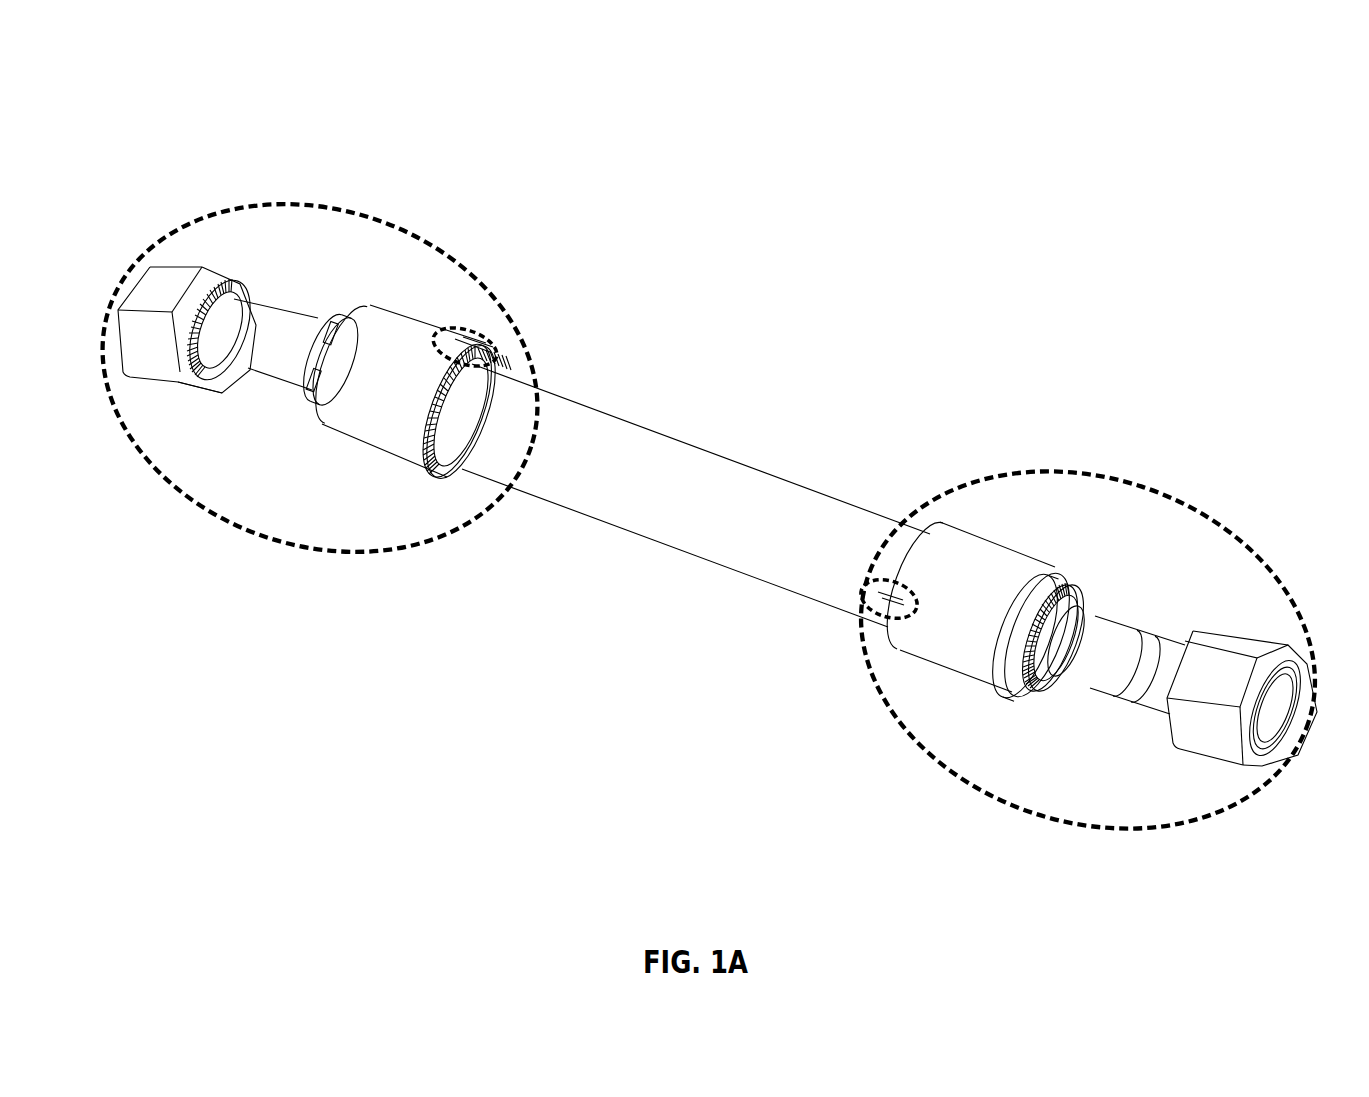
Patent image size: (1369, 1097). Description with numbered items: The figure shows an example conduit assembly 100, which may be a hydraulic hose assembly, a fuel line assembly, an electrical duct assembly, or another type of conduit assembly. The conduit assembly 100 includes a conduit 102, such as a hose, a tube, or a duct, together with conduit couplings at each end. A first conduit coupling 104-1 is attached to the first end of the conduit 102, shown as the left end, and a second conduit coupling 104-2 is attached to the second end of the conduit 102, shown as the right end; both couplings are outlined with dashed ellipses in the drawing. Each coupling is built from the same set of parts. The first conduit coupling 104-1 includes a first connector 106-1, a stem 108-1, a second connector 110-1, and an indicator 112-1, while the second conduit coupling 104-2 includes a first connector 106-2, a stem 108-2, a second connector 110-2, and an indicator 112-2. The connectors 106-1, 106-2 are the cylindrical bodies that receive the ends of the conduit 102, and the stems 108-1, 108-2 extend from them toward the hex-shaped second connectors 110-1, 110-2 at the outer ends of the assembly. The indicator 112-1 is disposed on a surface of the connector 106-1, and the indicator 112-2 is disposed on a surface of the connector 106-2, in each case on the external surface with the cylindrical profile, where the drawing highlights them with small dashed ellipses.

The conduit assembly 100 is at (210, 80).
The conduit 102 is at (699, 496).
The first conduit coupling 104-1 is at (432, 240).
The second conduit coupling 104-2 is at (1153, 490).
The first connector 106-1 is at (380, 429).
The first connector 106-2 is at (943, 647).
The stem 108-1 is at (272, 354).
The stem 108-2 is at (1096, 662).
The second connector 110-1 is at (155, 351).
The second connector 110-2 is at (1209, 736).
The indicator 112-1 is at (495, 343).
The indicator 112-2 is at (881, 613).